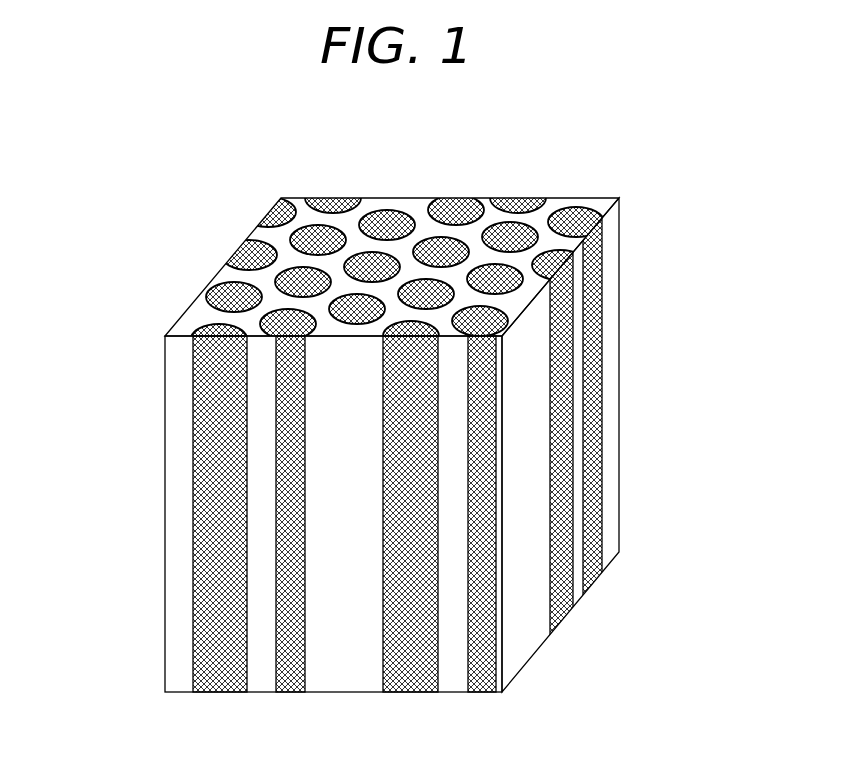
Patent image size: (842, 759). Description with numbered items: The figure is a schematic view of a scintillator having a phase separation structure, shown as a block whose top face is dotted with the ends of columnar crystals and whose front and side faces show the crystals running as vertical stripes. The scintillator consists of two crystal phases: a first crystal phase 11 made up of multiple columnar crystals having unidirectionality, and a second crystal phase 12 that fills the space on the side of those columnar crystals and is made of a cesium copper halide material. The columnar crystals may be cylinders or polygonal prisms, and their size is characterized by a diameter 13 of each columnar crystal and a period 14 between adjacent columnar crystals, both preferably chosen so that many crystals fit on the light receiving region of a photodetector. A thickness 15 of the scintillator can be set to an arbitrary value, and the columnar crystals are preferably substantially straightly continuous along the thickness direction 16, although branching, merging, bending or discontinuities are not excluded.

The first crystal phase 11 is at (387, 222).
The second crystal phase 12 is at (467, 234).
The diameter 13 is at (243, 312).
The period 14 is at (309, 222).
The thickness 15 is at (619, 552).
The thickness direction 16 is at (88, 679).